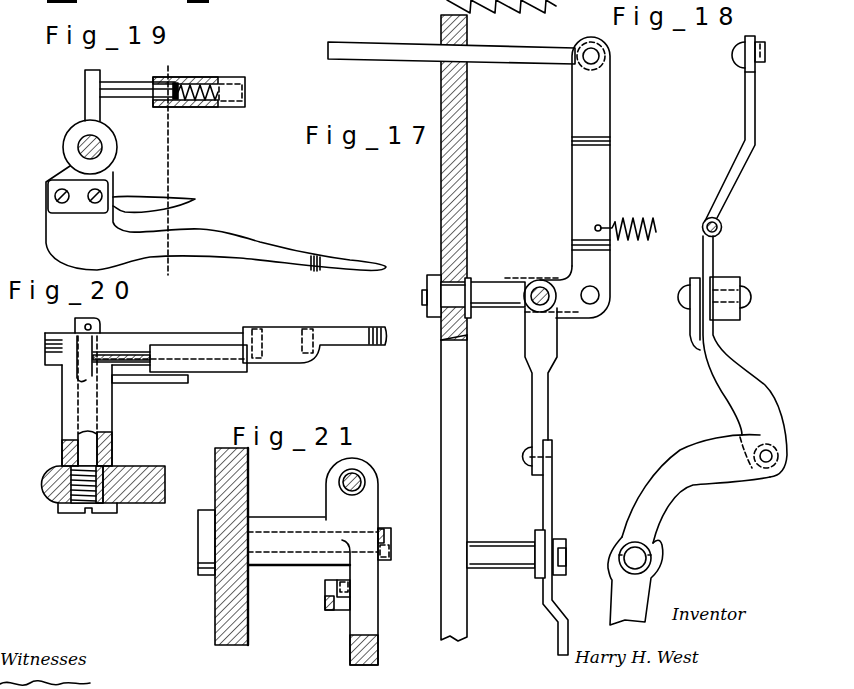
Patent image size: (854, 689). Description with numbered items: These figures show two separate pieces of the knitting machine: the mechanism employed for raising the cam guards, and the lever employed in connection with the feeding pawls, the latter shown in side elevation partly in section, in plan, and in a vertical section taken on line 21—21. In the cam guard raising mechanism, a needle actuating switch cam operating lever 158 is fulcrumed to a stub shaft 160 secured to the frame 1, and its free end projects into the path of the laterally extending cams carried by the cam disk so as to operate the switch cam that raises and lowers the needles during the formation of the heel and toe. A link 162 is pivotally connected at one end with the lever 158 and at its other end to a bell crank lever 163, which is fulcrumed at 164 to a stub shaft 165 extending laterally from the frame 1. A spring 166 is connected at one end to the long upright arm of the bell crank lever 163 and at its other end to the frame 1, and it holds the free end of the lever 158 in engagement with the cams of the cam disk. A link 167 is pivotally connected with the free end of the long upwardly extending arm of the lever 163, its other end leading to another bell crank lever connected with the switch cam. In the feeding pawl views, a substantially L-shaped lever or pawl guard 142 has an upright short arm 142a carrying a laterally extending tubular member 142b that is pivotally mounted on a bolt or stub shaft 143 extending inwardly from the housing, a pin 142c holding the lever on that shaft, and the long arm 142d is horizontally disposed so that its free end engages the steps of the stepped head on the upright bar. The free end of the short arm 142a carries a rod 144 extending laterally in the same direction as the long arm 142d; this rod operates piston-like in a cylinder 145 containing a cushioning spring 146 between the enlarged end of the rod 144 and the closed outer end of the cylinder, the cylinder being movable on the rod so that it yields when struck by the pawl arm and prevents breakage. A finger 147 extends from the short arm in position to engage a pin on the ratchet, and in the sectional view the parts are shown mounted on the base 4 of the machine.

In FIG. 21, the frame 1 is at (223, 610).
In FIG. 17, the frame 1 is at (482, 174).
In FIG. 20, the base plate 4 is at (148, 490).
In FIG. 19, the section line 21- 21 is at (182, 65).
In FIG. 19, the lever or pawl guard 142 is at (270, 253).
In FIG. 20, the lever or pawl guard 142 is at (277, 330).
In FIG. 19, the upright short arm 142a is at (89, 82).
In FIG. 20, the upright short arm 142a is at (93, 351).
In FIG. 19, the tubular member 142b is at (72, 137).
In FIG. 20, the tubular member 142b is at (68, 405).
In FIG. 21, the tubular member 142b is at (288, 558).
In FIG. 20, the pin 142c is at (80, 325).
In FIG. 21, the pin 142c is at (381, 530).
In FIG. 19, the long arm 142d is at (250, 256).
In FIG. 20, the long arm 142d is at (353, 343).
In FIG. 19, the bolt or stub shaft 143 is at (102, 148).
In FIG. 20, the bolt or stub shaft 143 is at (88, 453).
In FIG. 21, the bolt or stub shaft 143 is at (384, 548).
In FIG. 19, the rod 144 is at (136, 93).
In FIG. 20, the rod 144 is at (102, 357).
In FIG. 21, the rod 144 is at (363, 473).
In FIG. 19, the cylinder 145 is at (246, 88).
In FIG. 20, the cylinder 145 is at (173, 352).
In FIG. 21, the cylinder 145 is at (338, 488).
In FIG. 19, the cushioning spring 146 is at (197, 82).
In FIG. 19, the finger 147 is at (150, 203).
In FIG. 20, the finger 147 is at (147, 380).
In FIG. 21, the finger 147 is at (328, 605).
In FIG. 17, the needle actuating switch cam operating lever 158 is at (545, 507).
In FIG. 18, the needle actuating switch cam operating lever 158 is at (688, 480).
In FIG. 17, the stub shaft 160 is at (508, 559).
In FIG. 18, the stub shaft 160 is at (640, 558).
In FIG. 17, the link 162 is at (539, 416).
In FIG. 18, the link 162 is at (735, 383).
In FIG. 17, the bell crank lever 163 is at (597, 177).
In FIG. 18, the bell crank lever 163 is at (750, 104).
In FIG. 17, the fulcrum 164 is at (596, 299).
In FIG. 18, the fulcrum 164 is at (687, 290).
In FIG. 17, the stub shaft 165 is at (483, 287).
In FIG. 18, the stub shaft 165 is at (725, 282).
In FIG. 17, the spring 166 is at (621, 221).
In FIG. 18, the spring 166 is at (722, 224).
In FIG. 17, the link 167 is at (515, 57).
In FIG. 18, the link 167 is at (759, 43).